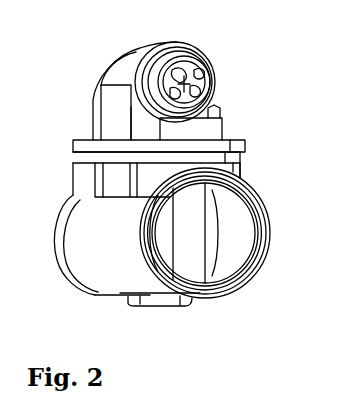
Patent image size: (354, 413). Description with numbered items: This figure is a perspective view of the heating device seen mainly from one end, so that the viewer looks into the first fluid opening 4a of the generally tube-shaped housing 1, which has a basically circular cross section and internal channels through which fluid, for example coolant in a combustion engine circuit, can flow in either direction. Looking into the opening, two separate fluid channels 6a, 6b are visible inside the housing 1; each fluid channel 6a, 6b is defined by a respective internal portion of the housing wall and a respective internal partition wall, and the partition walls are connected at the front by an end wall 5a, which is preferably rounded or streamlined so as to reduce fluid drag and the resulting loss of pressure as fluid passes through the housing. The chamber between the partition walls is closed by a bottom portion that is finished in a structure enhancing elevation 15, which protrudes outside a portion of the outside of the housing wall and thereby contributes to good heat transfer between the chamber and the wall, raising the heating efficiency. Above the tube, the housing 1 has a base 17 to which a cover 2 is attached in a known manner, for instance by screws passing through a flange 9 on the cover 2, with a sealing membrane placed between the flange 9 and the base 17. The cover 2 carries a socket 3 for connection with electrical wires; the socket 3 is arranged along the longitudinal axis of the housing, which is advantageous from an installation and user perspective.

The housing 1 is at (102, 271).
The cover 2 is at (108, 56).
The socket 3 is at (225, 72).
The first fluid opening 4a is at (264, 231).
The end wall 5a is at (203, 258).
The fluid channel 6a is at (242, 250).
The fluid channel 6b is at (153, 249).
The flange 9 is at (256, 144).
The structure enhancing elevation 15 is at (198, 315).
The base 17 is at (258, 176).